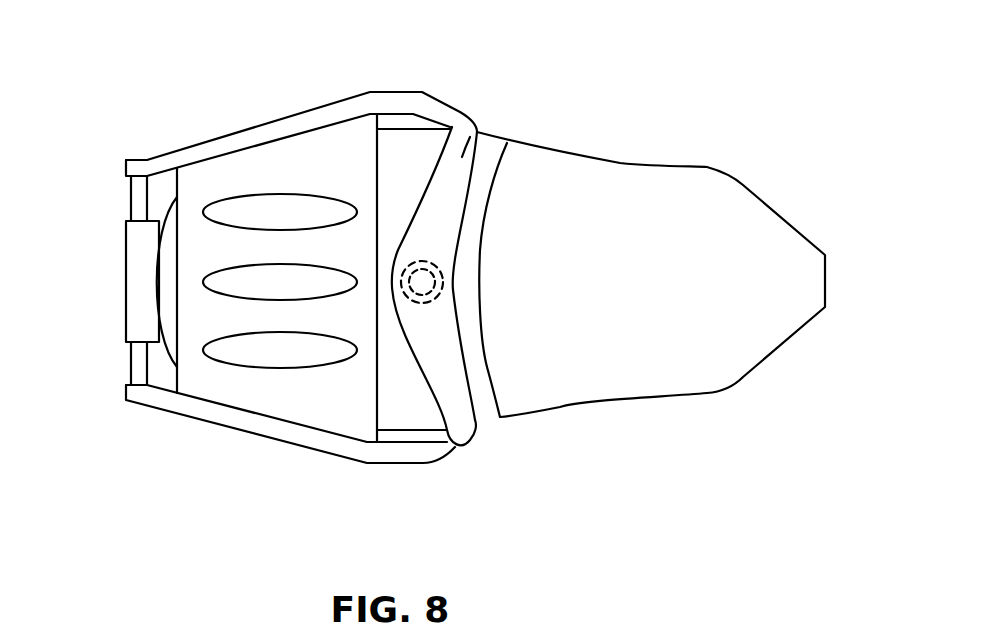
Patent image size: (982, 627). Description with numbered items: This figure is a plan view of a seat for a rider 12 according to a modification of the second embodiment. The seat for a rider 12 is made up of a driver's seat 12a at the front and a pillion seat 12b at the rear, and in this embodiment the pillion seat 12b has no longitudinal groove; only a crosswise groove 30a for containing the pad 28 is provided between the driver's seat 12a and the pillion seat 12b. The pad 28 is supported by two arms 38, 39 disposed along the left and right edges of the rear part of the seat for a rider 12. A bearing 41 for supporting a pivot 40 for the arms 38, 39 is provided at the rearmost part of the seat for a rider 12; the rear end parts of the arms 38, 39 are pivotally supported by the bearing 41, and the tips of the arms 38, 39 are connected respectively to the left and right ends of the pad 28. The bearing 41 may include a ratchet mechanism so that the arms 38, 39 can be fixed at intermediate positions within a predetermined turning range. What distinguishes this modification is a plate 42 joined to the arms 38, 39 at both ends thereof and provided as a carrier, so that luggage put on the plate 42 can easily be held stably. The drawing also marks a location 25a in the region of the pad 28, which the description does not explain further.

The seat for a rider 12 is at (252, 107).
The driver's seat 12a is at (692, 185).
The pillion seat 12b is at (418, 415).
The engagement hole 25a is at (443, 267).
The pad 28 is at (478, 128).
The crosswise groove 30a is at (488, 408).
The arm 38 is at (398, 102).
The arm 39 is at (327, 442).
The pivot 40 is at (137, 202).
The bearing 41 is at (132, 263).
The plate 42 is at (233, 380).